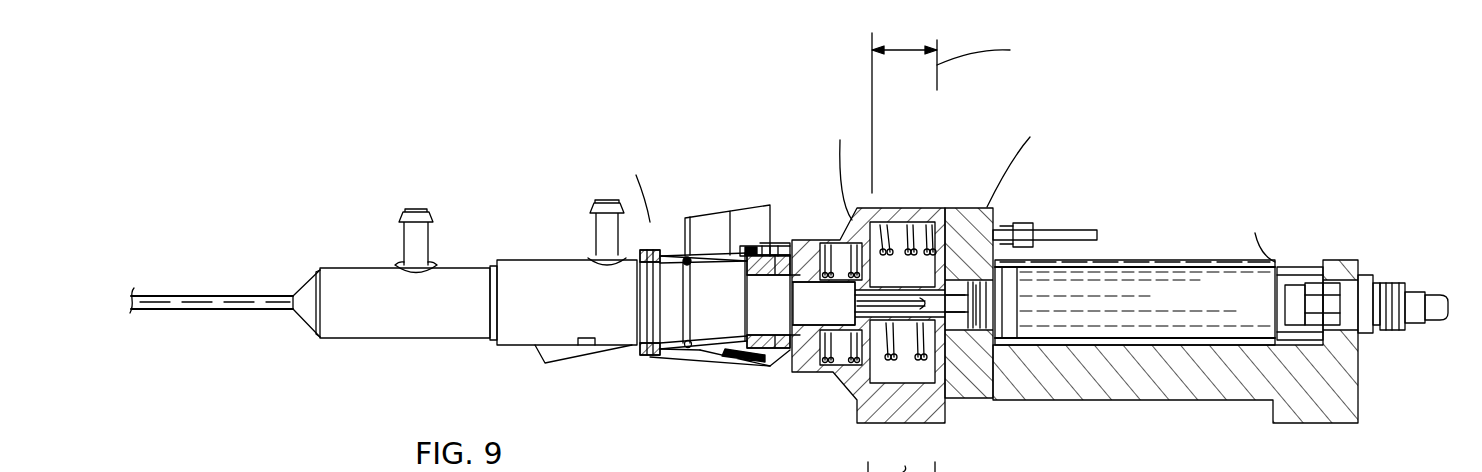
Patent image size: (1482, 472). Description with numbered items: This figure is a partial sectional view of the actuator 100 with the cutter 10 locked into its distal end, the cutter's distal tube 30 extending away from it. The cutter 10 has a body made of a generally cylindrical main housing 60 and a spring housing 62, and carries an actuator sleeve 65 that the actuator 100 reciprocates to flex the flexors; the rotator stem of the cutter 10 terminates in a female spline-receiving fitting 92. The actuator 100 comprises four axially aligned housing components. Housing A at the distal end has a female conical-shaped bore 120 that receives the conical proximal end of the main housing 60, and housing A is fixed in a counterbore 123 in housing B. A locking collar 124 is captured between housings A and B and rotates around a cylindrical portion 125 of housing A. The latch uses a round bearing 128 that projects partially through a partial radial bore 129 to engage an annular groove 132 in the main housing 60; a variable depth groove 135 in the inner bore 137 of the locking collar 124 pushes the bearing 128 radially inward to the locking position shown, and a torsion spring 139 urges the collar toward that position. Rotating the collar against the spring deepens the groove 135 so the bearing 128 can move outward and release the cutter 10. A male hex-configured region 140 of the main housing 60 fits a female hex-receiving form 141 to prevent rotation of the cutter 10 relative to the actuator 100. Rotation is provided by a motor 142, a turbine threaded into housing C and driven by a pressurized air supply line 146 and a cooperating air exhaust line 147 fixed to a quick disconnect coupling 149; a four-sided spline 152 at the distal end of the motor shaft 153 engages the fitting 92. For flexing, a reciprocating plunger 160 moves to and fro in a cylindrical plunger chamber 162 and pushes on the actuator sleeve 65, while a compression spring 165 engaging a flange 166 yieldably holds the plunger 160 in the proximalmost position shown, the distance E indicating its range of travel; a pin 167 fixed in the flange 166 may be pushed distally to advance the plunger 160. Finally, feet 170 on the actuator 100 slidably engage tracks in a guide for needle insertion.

The cutter 10 is at (505, 190).
The aspiration needle tube 30 is at (240, 295).
The main housing 60 is at (563, 260).
The spring housing 62 is at (358, 268).
The actuator sleeve 65 is at (798, 352).
The female spline-receiving fitting 92 is at (880, 207).
The actuator 100 is at (795, 100).
The female conical-shaped bore 120 is at (706, 355).
The counterbore 123 is at (774, 350).
The locking collar 124 is at (722, 213).
The cylindrical portion 125 is at (712, 352).
The round bearing 128 is at (676, 256).
The partial radial bore 129 is at (656, 270).
The annular groove 132 is at (642, 355).
The variable depth groove 135 is at (686, 255).
The inner bore 137 is at (737, 218).
The torsion spring 139 is at (780, 224).
The male hex-configured region 140 is at (770, 350).
The female hex-receiving form 141 is at (780, 350).
The motor 142 is at (1160, 278).
The pressurized air supply line 146 is at (1308, 272).
The air exhaust line 147 is at (1328, 317).
The quick disconnect coupling 149 is at (1415, 295).
The four-sided spline 152 is at (903, 207).
The motor shaft 153 is at (990, 365).
The reciprocating plunger 160 is at (918, 207).
The cylindrical plunger chamber 162 is at (928, 207).
The compression spring 165 is at (910, 207).
The flange 166 is at (962, 332).
The pin 167 is at (1077, 231).
The feet 170 is at (1276, 415).